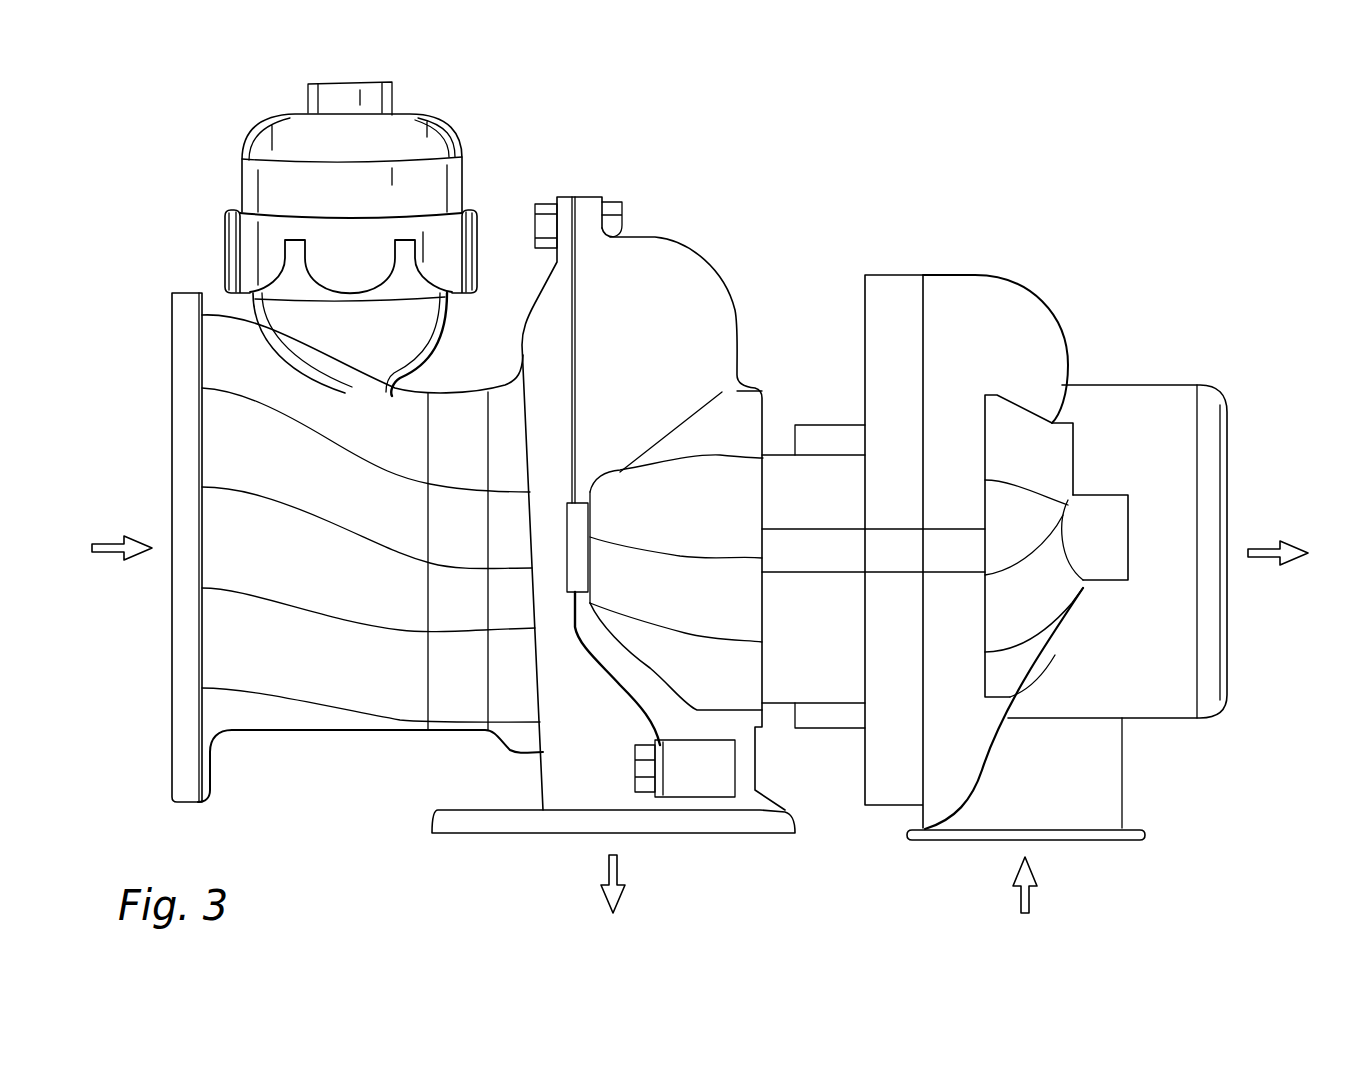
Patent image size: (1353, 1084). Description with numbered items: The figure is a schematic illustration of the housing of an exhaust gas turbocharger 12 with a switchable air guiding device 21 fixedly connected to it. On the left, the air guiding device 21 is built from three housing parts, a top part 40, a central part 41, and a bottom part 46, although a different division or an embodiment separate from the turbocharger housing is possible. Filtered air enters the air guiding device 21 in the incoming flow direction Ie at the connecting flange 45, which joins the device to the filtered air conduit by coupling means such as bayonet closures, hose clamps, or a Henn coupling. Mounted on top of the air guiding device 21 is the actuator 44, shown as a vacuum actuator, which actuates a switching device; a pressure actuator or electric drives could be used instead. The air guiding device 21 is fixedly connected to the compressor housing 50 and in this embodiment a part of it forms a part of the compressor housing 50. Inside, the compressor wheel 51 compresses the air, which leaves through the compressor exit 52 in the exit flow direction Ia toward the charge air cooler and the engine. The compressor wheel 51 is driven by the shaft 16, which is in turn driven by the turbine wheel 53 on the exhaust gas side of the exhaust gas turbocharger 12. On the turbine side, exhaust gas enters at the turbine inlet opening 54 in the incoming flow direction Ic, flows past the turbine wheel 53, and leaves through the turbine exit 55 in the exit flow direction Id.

The exhaust gas turbocharger 12 is at (1108, 292).
The shaft 16 is at (815, 550).
The air guiding device 21 is at (306, 739).
The top part 40 is at (365, 710).
The central part 41 is at (457, 705).
The actuator 44 is at (434, 126).
The connecting flange 45 is at (190, 612).
The bottom part 46 is at (512, 735).
The compressor housing 50 is at (677, 258).
The compressor wheel 51 is at (677, 432).
The compressor exit 52 is at (512, 823).
The turbine wheel 53 is at (1043, 652).
The turbine inlet opening 54 is at (1110, 832).
The turbine exit 55 is at (1228, 465).
The incoming flow Ie is at (110, 542).
The exit flow Ia is at (620, 873).
The incoming flow direction Ic is at (1020, 895).
The exit flow direction Id is at (1268, 560).